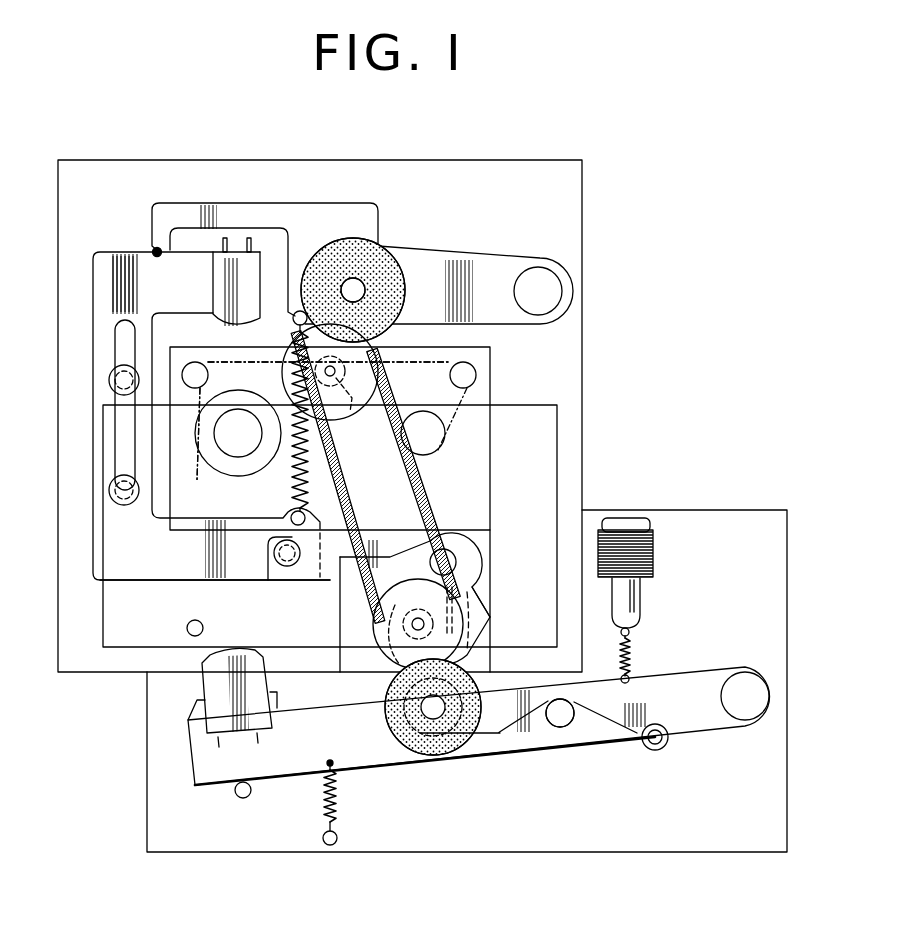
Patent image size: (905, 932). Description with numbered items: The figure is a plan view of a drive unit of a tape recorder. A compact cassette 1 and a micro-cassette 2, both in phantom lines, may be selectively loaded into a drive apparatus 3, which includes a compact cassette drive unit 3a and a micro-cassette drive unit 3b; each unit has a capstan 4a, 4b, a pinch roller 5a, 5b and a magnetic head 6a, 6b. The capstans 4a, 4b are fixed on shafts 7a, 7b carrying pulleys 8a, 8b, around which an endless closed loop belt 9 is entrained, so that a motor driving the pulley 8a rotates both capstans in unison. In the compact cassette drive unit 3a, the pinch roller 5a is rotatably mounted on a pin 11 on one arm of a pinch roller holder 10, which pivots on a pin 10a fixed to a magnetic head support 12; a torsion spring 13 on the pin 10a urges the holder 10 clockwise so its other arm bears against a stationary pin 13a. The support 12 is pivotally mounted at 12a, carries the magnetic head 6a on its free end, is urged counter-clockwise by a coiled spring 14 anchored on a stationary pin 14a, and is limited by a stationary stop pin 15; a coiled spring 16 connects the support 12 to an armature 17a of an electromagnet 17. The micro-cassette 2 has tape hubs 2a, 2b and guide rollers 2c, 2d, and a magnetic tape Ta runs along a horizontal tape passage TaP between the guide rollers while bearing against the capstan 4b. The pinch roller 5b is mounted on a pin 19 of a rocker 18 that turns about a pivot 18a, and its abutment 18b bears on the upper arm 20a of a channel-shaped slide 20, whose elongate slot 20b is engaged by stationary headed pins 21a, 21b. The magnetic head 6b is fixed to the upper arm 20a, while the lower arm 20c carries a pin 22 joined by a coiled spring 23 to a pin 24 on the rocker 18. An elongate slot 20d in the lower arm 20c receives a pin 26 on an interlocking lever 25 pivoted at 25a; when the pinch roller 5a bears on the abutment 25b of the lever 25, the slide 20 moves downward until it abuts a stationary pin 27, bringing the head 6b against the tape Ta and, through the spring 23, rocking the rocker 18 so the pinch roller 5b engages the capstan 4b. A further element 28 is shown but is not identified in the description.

The compact cassette 1 is at (560, 510).
The micro-cassette 2 is at (490, 370).
The tape hub 2a is at (230, 455).
The tape hub 2b is at (445, 450).
The guide roller 2c is at (208, 378).
The guide roller 2d is at (450, 378).
The drive apparatus 3 is at (647, 458).
The compact cassette drive unit 3a is at (693, 510).
The micro-cassette drive unit 3b is at (570, 160).
The capstan 4a is at (416, 620).
The capstan 4b is at (328, 420).
The pinch roller 5a is at (453, 732).
The pinch roller 5b is at (364, 285).
The magnetic head 6a is at (260, 720).
The magnetic head 6b is at (243, 252).
The shaft 7a is at (400, 648).
The shaft 7b is at (353, 400).
The pulley 8a is at (378, 627).
The pulley 8b is at (347, 437).
The endless closed loop belt 9 is at (425, 493).
The pinch roller holder 10 is at (548, 728).
The pin 10a is at (570, 721).
The pin 11 is at (424, 730).
The magnetic head support 12 is at (374, 758).
The pivot 12a is at (755, 705).
The torsion spring 13 is at (506, 735).
The stationary pin 13a is at (662, 744).
The coiled spring 14 is at (323, 802).
The stationary pin 14a is at (337, 843).
The stationary stop pin 15 is at (239, 797).
The coiled spring 16 is at (634, 658).
The electromagnet 17 is at (648, 565).
The armature 17a is at (641, 614).
The rocker 18 is at (493, 268).
The pivot 18a is at (540, 278).
The abutment 18b is at (157, 215).
The pin 19 is at (368, 252).
The channel-shaped slide 20 is at (93, 393).
The upper arm 20a is at (125, 280).
The elongate slot 20b is at (128, 423).
The lower arm 20c is at (168, 575).
The elongate slot 20d is at (293, 562).
The stationary headed pin 21a is at (109, 375).
The stationary headed pin 21b is at (109, 490).
The pin 22 is at (293, 512).
The coiled spring 23 is at (313, 480).
The pin 24 is at (294, 323).
The interlocking lever 25 is at (476, 598).
The pivot 25a is at (458, 568).
The abutment 25b is at (493, 622).
The pin 26 is at (285, 567).
The stationary pin 27 is at (203, 630).
The pivot 28 is at (155, 249).
The magnetic tape Ta is at (189, 447).
The tape passage TaP is at (450, 361).